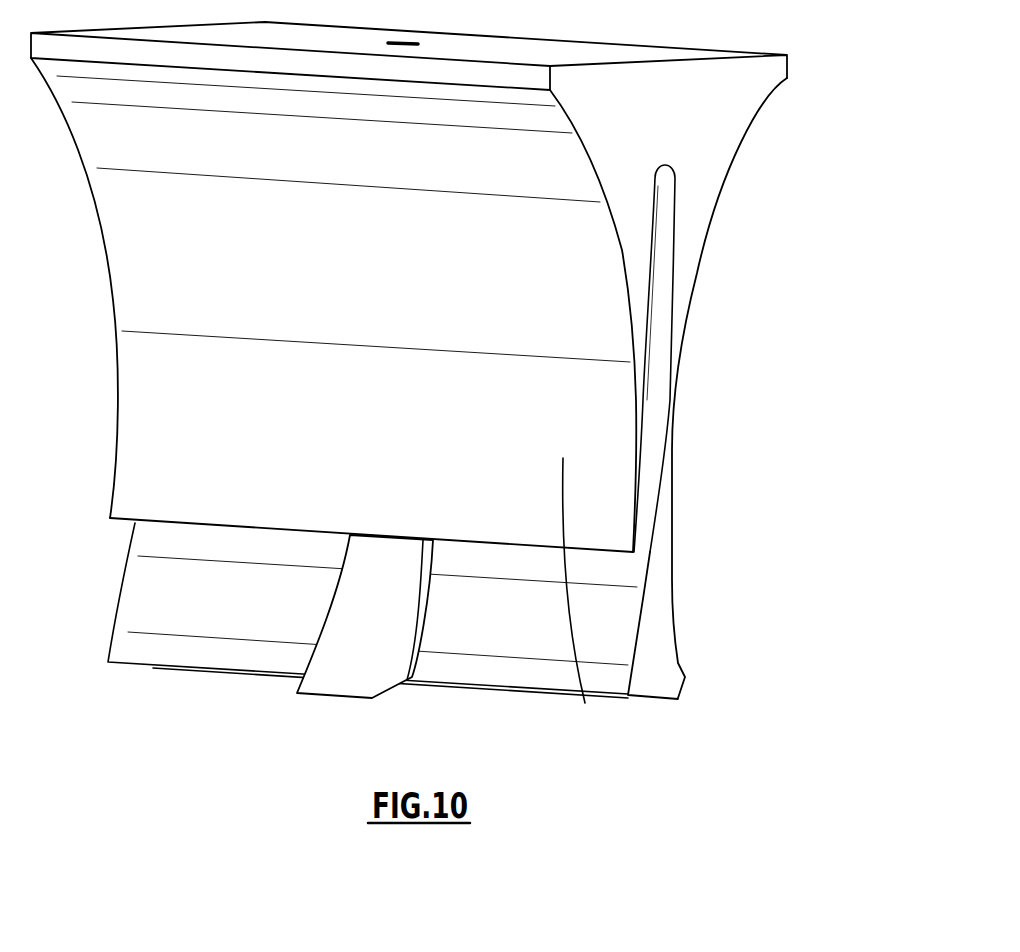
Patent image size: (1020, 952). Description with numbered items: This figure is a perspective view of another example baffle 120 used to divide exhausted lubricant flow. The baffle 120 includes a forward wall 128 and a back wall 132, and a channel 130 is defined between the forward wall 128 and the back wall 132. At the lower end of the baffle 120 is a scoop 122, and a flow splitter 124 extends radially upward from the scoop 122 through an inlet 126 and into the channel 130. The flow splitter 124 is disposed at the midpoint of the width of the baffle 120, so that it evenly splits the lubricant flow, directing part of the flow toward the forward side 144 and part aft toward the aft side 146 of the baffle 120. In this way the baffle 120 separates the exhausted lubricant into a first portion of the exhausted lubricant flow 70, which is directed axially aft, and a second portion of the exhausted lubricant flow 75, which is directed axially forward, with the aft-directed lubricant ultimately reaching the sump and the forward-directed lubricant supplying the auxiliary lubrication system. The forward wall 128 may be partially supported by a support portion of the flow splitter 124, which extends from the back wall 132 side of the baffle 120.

The first portion of the exhausted lubricant flow 70 is at (652, 325).
The second portion of the exhausted lubricant flow 75 is at (44, 302).
The baffle 120 is at (808, 266).
The scoop 122 is at (359, 583).
The flow splitter 124 is at (269, 587).
The inlet 126 is at (222, 560).
The forward wall 128 is at (477, 598).
The channel 130 is at (655, 363).
The back wall 132 is at (646, 606).
The forward side 144 is at (104, 260).
The aft side 146 is at (690, 237).